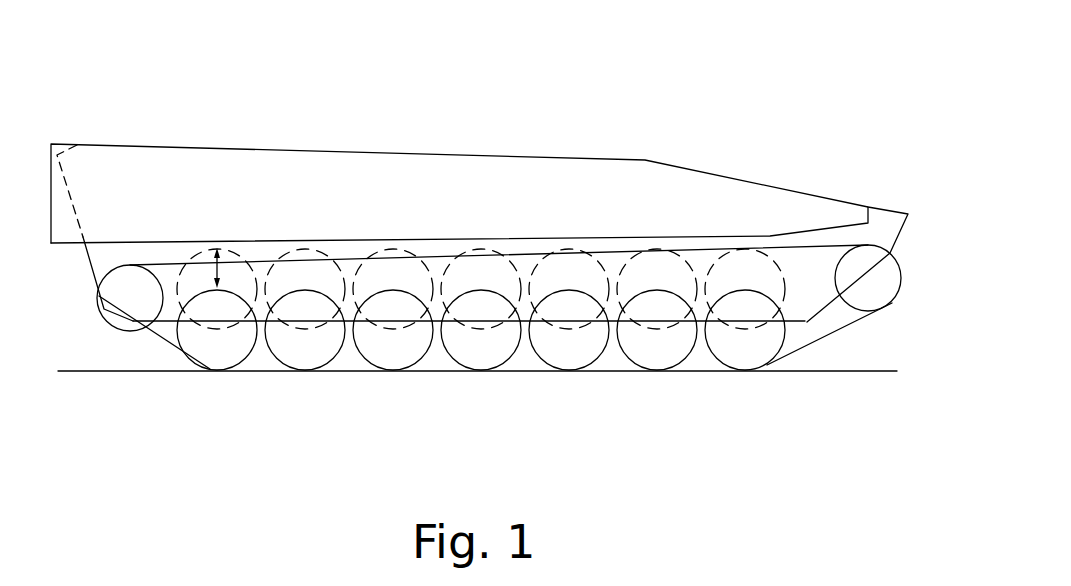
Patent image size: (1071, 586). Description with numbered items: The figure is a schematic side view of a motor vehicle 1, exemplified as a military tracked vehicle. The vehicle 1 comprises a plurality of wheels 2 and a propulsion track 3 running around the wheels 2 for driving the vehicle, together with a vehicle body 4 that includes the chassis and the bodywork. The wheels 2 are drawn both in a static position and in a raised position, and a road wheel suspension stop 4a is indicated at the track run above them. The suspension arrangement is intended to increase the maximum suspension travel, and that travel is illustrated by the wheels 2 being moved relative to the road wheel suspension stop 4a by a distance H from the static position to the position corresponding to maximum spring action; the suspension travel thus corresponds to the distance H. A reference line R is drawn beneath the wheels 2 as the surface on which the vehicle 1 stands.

The motor vehicle 1 is at (681, 78).
The wheels 2 is at (208, 367).
The propulsion track 3 is at (797, 248).
The vehicle body 4 is at (468, 332).
The road wheel suspension stop 4a is at (528, 248).
The distance H is at (227, 268).
The ground reference plane R is at (100, 372).